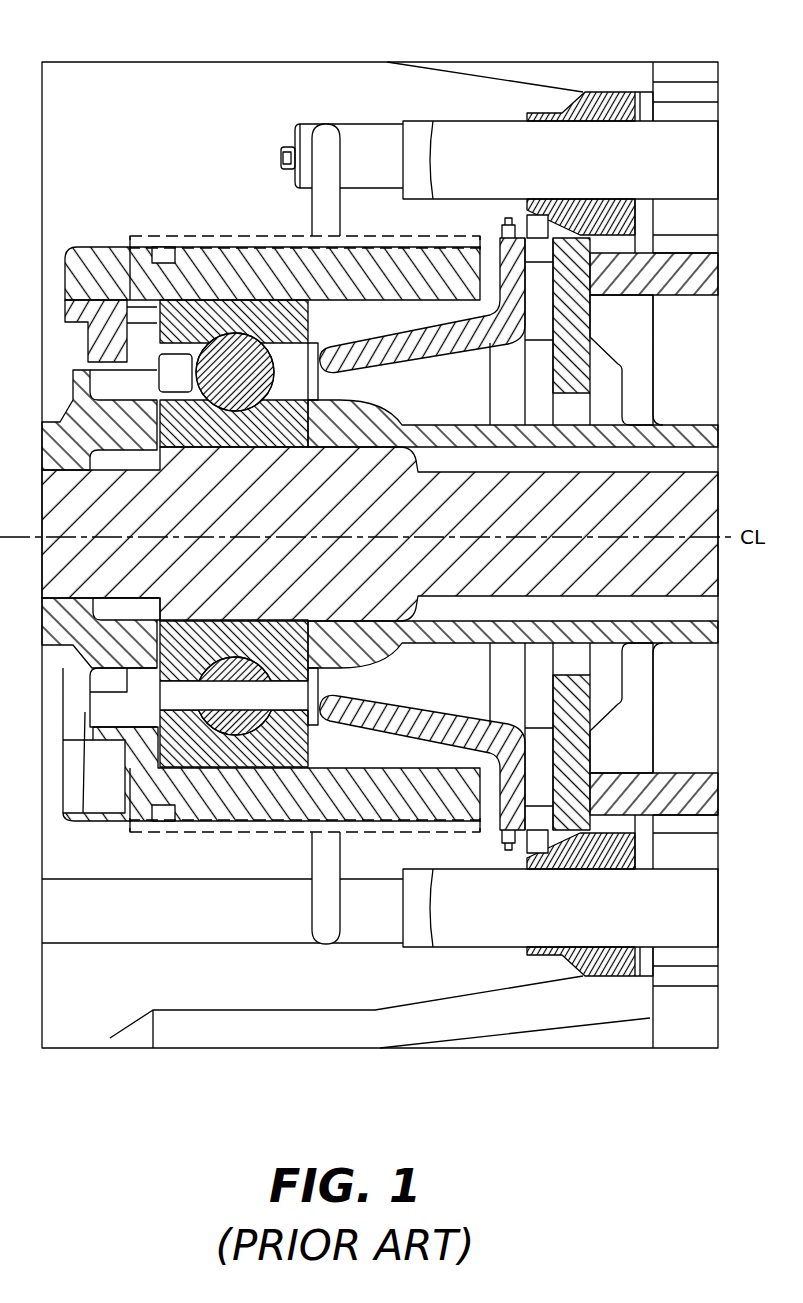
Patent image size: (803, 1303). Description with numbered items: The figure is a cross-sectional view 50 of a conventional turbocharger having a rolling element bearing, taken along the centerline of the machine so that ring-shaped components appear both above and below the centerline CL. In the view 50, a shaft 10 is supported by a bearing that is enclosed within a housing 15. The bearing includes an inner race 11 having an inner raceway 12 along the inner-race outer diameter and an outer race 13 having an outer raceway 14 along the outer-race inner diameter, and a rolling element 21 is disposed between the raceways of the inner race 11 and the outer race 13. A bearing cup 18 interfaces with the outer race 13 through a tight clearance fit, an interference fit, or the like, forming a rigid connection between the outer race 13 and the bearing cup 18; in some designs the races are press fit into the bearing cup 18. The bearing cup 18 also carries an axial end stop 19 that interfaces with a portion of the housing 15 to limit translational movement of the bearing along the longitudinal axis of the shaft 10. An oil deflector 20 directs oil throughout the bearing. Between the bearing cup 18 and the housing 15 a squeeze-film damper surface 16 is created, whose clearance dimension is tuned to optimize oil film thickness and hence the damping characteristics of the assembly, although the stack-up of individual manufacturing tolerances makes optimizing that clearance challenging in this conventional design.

The cross-sectional view 50 is at (270, 46).
The housing 15 is at (135, 131).
The bearing cup 18 is at (205, 252).
The squeeze-film damper surface 16 is at (255, 230).
The outer race 13 is at (190, 333).
The outer raceway 14 is at (305, 343).
The rolling element 21 is at (235, 345).
The inner race 11 is at (190, 431).
The inner raceway 12 is at (261, 533).
The oil deflector 20 is at (410, 353).
The shaft 10 is at (518, 511).
The axial end stop 19 is at (82, 728).